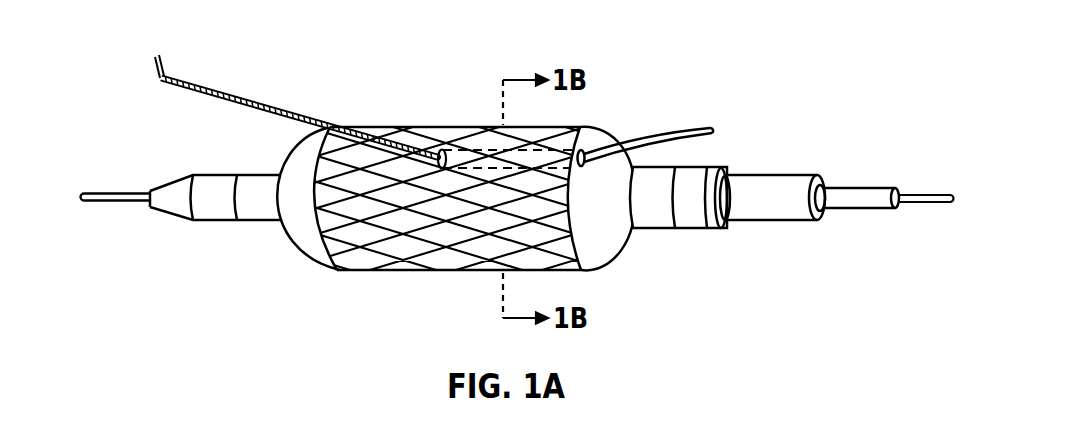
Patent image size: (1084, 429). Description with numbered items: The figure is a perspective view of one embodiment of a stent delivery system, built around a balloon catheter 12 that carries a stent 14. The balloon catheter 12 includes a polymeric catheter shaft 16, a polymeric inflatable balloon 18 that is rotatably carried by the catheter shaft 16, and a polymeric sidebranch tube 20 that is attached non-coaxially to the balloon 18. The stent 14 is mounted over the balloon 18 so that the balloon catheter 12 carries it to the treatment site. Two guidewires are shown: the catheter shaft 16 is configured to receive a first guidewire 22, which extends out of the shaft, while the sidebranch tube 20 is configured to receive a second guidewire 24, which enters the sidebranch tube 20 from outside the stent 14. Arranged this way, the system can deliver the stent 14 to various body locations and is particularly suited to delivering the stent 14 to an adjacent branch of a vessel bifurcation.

The balloon catheter 12 is at (722, 260).
The stent 14 is at (352, 258).
The catheter shaft 16 is at (768, 183).
The inflatable balloon 18 is at (596, 122).
The sidebranch tube 20 is at (459, 118).
The first guidewire 22 is at (129, 203).
The second guidewire 24 is at (260, 102).